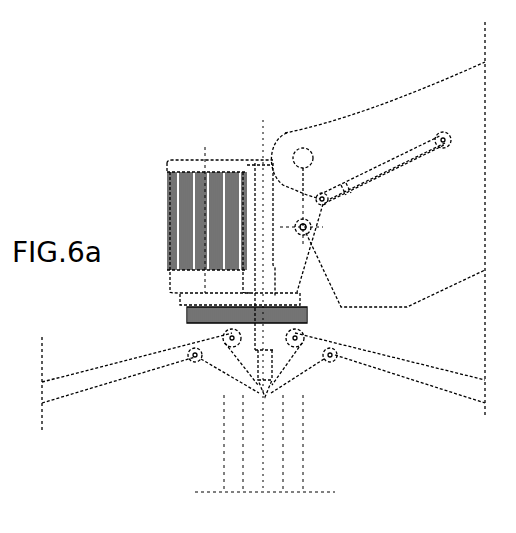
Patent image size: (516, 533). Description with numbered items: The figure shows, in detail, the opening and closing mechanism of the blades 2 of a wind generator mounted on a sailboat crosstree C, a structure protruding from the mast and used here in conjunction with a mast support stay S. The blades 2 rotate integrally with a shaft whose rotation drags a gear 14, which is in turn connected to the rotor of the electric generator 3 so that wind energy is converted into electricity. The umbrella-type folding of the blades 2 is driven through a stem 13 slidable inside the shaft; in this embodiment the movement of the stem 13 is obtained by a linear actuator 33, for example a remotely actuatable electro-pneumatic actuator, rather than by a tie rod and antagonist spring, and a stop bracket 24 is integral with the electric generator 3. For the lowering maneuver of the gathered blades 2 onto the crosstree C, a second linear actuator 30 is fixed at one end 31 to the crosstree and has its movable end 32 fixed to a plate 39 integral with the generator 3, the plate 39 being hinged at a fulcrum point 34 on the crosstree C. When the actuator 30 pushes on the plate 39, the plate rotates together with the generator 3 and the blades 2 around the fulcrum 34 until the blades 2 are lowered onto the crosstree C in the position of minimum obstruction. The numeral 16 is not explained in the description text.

The blades 2 is at (93, 368).
The electric generator 3 is at (168, 171).
The stem 13 is at (256, 368).
The gear 14 is at (184, 315).
The right support arm 16 is at (314, 365).
The stop bracket 24 is at (254, 156).
The second linear actuator 30 is at (383, 132).
The fixed end 31 is at (443, 150).
The movable end 32 is at (327, 204).
The linear actuator 33 is at (252, 177).
The fulcrum point 34 is at (313, 239).
The plate 39 is at (303, 284).
The mast support stay S is at (303, 148).
The crosstree C is at (454, 74).